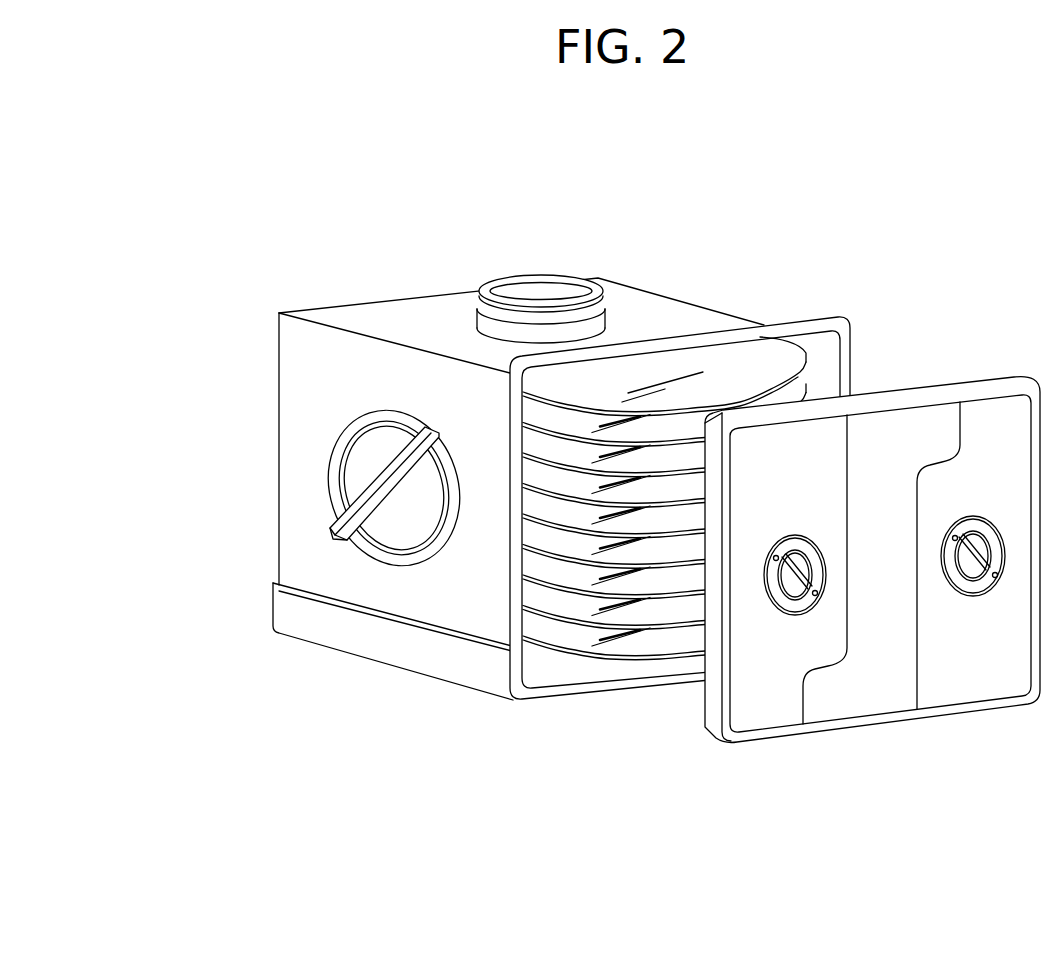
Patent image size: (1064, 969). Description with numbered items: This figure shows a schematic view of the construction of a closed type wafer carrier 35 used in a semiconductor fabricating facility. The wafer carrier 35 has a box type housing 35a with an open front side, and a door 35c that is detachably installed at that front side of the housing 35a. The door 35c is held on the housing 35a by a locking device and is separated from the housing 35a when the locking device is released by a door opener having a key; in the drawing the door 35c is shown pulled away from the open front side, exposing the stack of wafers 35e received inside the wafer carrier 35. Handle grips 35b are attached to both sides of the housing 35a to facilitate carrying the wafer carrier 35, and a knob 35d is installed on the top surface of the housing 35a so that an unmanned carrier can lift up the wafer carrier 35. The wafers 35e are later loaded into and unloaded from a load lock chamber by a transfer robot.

The wafer carrier 35 is at (840, 182).
The housing 35a is at (382, 305).
The handle grips 35b is at (362, 489).
The door 35c is at (767, 718).
The knob 35d is at (542, 277).
The wafers 35e is at (620, 653).